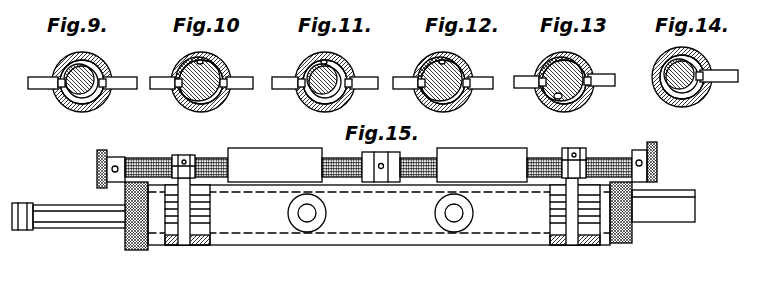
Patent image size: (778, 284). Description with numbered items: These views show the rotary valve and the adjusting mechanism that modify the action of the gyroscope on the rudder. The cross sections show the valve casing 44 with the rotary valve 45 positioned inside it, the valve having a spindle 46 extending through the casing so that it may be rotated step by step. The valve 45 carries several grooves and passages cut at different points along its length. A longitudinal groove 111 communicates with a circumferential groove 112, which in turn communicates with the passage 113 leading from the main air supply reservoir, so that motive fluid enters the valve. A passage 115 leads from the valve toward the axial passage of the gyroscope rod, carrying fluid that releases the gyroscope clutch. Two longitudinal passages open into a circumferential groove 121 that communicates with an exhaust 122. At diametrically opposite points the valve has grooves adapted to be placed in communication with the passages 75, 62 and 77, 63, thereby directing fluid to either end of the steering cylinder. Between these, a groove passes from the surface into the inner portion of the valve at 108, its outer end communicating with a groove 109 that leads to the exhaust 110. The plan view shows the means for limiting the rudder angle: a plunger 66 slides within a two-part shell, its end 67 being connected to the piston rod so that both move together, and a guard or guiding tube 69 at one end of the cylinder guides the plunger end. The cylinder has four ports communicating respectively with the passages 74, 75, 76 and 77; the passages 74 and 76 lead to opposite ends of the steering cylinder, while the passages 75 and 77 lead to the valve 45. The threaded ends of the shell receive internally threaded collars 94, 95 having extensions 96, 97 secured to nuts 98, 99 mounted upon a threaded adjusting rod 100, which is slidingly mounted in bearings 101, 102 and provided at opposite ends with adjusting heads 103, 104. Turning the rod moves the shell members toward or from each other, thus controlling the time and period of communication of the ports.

In FIG. 9, the valve casing 44 is at (80, 110).
In FIG. 10, the valve casing 44 is at (224, 103).
In FIG. 11, the valve casing 44 is at (303, 96).
In FIG. 12, the valve casing 44 is at (470, 93).
In FIG. 13, the valve casing 44 is at (578, 60).
In FIG. 14, the valve casing 44 is at (701, 57).
In FIG. 9, the valve 45 is at (60, 96).
In FIG. 10, the valve 45 is at (186, 107).
In FIG. 11, the valve 45 is at (320, 105).
In FIG. 12, the valve 45 is at (462, 104).
In FIG. 13, the valve 45 is at (546, 104).
In FIG. 14, the valve 45 is at (705, 91).
In FIG. 13, the spindle 46 is at (586, 93).
In FIG. 12, the passage 62 is at (408, 78).
In FIG. 11, the passage 63 is at (370, 88).
In FIG. 12, the passage 63 is at (483, 78).
In FIG. 15, the plunger 66 is at (100, 226).
In FIG. 15, the end of plunger 67 is at (30, 204).
In FIG. 15, the guard or guiding tube 69 is at (662, 224).
In FIG. 15, the passage 74 is at (288, 213).
In FIG. 13, the passage 75 is at (527, 77).
In FIG. 15, the passage 76 is at (435, 213).
In FIG. 13, the passage 77 is at (602, 76).
In FIG. 15, the internally threaded collar 94 is at (180, 246).
In FIG. 15, the internally threaded collar 95 is at (575, 246).
In FIG. 15, the extension 96 is at (210, 158).
In FIG. 15, the extension 97 is at (552, 164).
In FIG. 15, the nut 98 is at (176, 156).
In FIG. 15, the nut 99 is at (574, 148).
In FIG. 15, the threaded adjusting rod 100 is at (332, 165).
In FIG. 15, the bearing 101 is at (268, 141).
In FIG. 15, the bearing 102 is at (490, 150).
In FIG. 15, the adjusting head 103 is at (97, 166).
In FIG. 15, the adjusting head 104 is at (657, 166).
In FIG. 13, the inner portion of groove 108 is at (575, 103).
In FIG. 14, the groove 109 is at (660, 62).
In FIG. 14, the exhaust 110 is at (724, 72).
In FIG. 10, the longitudinal groove 111 is at (203, 60).
In FIG. 11, the longitudinal groove 111 is at (325, 60).
In FIG. 12, the longitudinal groove 111 is at (445, 60).
In FIG. 11, the circumferential groove 112 is at (340, 62).
In FIG. 10, the passage 113 is at (163, 89).
In FIG. 11, the passage 113 is at (284, 78).
In FIG. 9, the passage 115 is at (123, 78).
In FIG. 10, the passage 115 is at (236, 78).
In FIG. 9, the circumferential groove 121 is at (104, 104).
In FIG. 9, the exhaust 122 is at (56, 80).